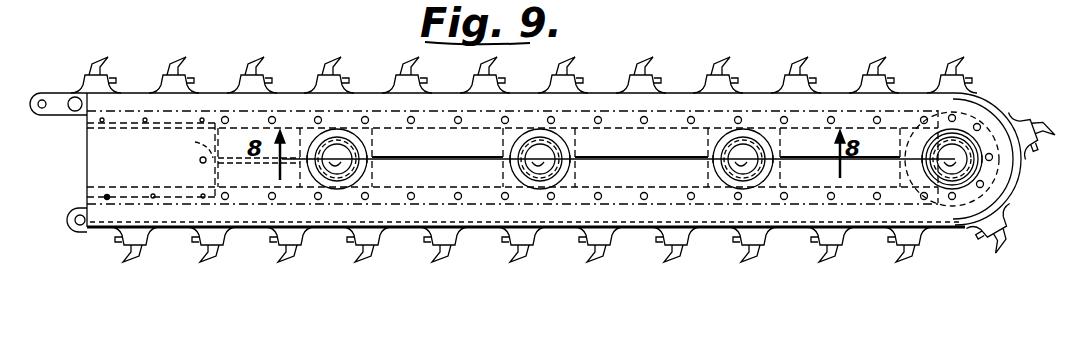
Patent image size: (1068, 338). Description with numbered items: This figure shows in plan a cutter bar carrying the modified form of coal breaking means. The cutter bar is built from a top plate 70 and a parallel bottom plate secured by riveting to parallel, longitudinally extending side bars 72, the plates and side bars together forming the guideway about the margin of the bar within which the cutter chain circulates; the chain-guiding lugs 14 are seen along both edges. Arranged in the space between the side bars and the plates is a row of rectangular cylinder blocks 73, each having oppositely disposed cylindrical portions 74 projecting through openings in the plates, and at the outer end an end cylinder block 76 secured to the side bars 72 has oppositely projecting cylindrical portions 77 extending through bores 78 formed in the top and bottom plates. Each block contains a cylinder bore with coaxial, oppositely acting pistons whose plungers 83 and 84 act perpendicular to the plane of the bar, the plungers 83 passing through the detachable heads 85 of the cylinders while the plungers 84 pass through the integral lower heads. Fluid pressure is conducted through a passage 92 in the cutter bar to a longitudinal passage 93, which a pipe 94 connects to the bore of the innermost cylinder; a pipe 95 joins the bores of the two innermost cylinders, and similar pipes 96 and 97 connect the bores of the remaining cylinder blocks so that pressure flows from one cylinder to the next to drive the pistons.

The plunger 84 is at (391, 10).
The top plate 70 is at (683, 93).
The side bars 72 is at (668, 79).
The conveyor flight bracket 14 is at (521, 234).
The cylindrical portions 74 is at (764, 138).
The cylinder blocks 73 is at (761, 144).
The detachable heads 85 is at (931, 180).
The plunger 83 is at (936, 165).
The pipe 95 is at (455, 160).
The pipe 96 is at (668, 160).
The pipe 97 is at (858, 162).
The pipe 94 is at (253, 163).
The passage 92 is at (200, 158).
The longitudinal passage 93 is at (195, 143).
The end cylinder block 76 is at (978, 120).
The cylindrical portions 77 is at (1008, 130).
The bores 78 is at (962, 186).